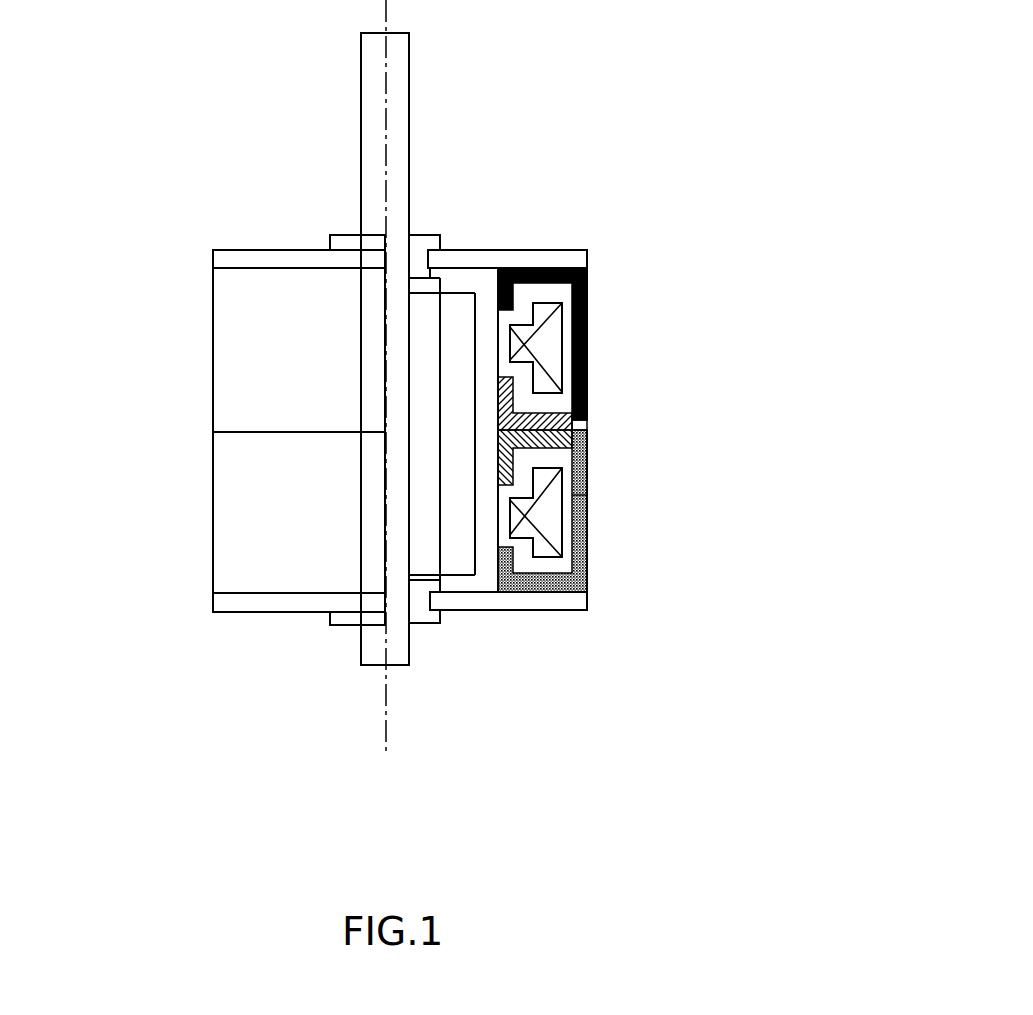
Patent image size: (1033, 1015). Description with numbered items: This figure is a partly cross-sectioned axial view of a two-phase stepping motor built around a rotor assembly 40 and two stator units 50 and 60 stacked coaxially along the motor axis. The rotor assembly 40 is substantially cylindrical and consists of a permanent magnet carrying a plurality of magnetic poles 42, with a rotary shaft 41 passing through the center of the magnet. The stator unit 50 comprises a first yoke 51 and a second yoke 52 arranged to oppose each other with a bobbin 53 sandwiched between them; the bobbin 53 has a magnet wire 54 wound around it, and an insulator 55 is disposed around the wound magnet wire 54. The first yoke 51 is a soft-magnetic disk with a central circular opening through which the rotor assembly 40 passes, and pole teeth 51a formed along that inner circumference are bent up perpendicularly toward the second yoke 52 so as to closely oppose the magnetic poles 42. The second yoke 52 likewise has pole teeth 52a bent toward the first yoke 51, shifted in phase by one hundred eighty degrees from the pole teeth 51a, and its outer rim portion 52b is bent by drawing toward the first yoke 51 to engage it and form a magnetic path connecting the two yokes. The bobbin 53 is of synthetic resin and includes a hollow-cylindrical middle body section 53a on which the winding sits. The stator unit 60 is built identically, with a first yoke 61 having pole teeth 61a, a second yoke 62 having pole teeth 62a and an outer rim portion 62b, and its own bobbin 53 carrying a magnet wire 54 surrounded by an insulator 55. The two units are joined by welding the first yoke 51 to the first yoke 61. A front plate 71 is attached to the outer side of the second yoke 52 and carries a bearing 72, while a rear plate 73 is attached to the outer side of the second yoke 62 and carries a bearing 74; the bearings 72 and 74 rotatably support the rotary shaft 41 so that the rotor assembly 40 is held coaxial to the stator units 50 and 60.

The rotor assembly 40 is at (442, 272).
The rotary shaft 41 is at (410, 63).
The magnetic poles 42 is at (476, 577).
The stator unit 50 is at (200, 358).
The first yoke 51 is at (587, 422).
The pole teeth 51a is at (498, 397).
The second yoke 52 is at (213, 322).
The pole teeth 52a is at (498, 302).
The outer rim portion 52b is at (587, 332).
The bobbin 53 is at (552, 288).
The middle body section 53a is at (495, 356).
The magnet wire 54 is at (549, 340).
The insulator 55 is at (587, 370).
The stator unit 60 is at (200, 537).
The first yoke 61 is at (587, 440).
The pole teeth 61a is at (495, 468).
The second yoke 62 is at (213, 563).
The pole teeth 62a is at (495, 550).
The outer rim portion 62b is at (587, 520).
The front plate 71 is at (270, 248).
The bearing 72 is at (422, 235).
The rear plate 73 is at (270, 612).
The bearing 74 is at (443, 625).